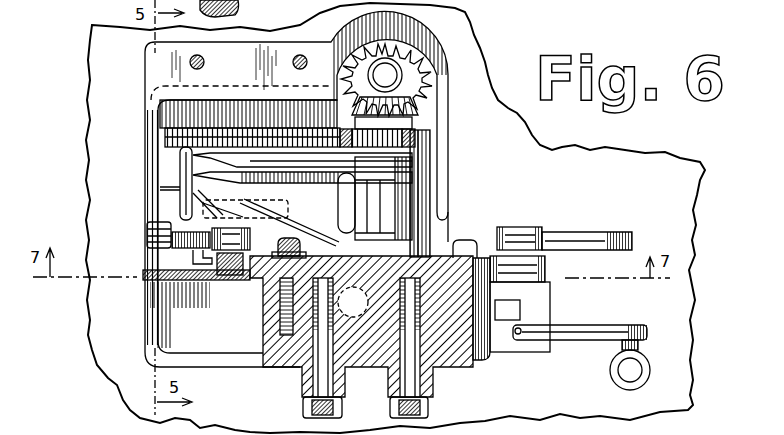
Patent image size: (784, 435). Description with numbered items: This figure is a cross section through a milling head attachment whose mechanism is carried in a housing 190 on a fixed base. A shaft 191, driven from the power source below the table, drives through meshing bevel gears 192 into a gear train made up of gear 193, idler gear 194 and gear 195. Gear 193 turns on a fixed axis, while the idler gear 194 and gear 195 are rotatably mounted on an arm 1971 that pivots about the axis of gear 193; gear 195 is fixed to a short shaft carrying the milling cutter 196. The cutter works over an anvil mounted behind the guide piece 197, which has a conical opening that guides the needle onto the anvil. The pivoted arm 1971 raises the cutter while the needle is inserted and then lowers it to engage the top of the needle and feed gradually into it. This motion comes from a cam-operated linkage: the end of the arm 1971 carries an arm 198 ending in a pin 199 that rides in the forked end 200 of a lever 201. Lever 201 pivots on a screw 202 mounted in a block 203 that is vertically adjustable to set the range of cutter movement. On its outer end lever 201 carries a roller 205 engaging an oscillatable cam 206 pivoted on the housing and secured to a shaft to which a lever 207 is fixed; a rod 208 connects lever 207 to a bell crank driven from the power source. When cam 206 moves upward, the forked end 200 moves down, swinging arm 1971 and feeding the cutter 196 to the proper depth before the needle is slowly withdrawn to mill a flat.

The housing 190 is at (447, 27).
The shaft 191 is at (385, 75).
The bevel gears 192 is at (413, 108).
The gear 193 is at (430, 136).
The idler gear 194 is at (263, 127).
The gear 195 is at (158, 128).
The milling cutter 196 is at (183, 247).
The guide piece 197 is at (148, 233).
The arm 1971 is at (289, 163).
The arm 198 is at (195, 195).
The pin 199 is at (233, 252).
The forked end 200 is at (205, 265).
The lever 201 is at (440, 258).
The screw 202 is at (290, 240).
The block 203 is at (440, 332).
The roller 205 is at (513, 230).
The cam 206 is at (597, 232).
The lever 207 is at (588, 338).
The rod 208 is at (632, 369).